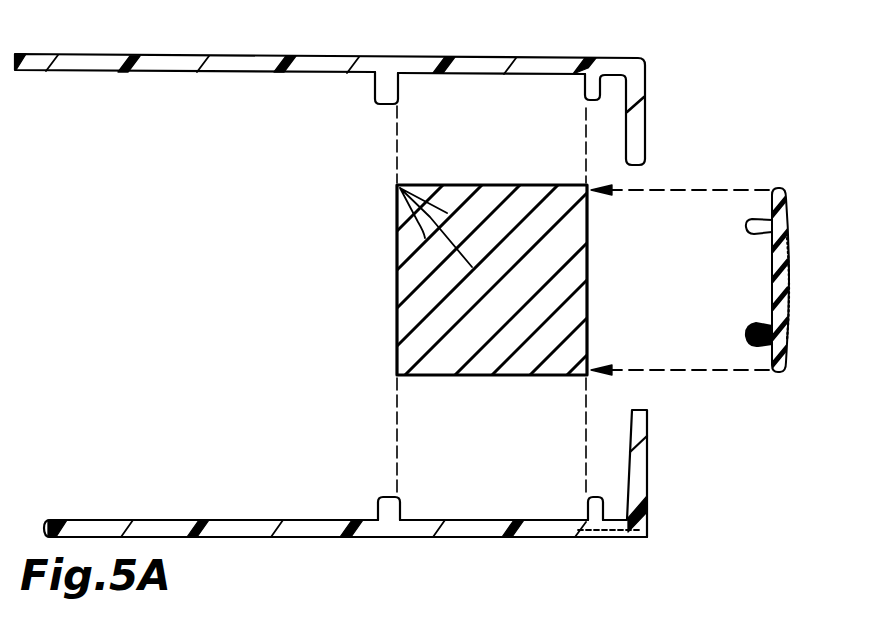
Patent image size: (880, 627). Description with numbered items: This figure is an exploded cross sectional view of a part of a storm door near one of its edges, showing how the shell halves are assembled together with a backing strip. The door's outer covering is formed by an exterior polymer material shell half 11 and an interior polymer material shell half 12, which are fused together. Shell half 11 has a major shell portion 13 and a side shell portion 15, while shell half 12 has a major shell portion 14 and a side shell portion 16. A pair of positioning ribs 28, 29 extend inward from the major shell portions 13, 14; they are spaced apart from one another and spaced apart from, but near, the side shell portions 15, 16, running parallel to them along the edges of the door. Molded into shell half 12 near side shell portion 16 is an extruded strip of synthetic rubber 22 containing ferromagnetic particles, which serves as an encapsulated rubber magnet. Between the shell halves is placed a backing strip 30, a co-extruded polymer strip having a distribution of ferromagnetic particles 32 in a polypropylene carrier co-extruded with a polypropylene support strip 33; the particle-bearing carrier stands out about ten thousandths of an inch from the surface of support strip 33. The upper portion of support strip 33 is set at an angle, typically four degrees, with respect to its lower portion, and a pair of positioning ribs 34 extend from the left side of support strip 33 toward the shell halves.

The exterior polymer material shell half 11 is at (189, 55).
The interior polymer material shell half 12 is at (290, 539).
The major shell portion 13 is at (472, 56).
The major shell portion 14 is at (524, 540).
The side shell portion 15 is at (644, 112).
The side shell portion 16 is at (650, 472).
The extruded strip of synthetic rubber 22 is at (618, 538).
The positioning rib 28 is at (375, 101).
The positioning rib 29 is at (585, 100).
The backing strip 30 is at (803, 214).
The ferromagnetic particles 32 is at (792, 292).
The polypropylene support strip 33 is at (773, 258).
The positioning ribs 34 is at (746, 227).